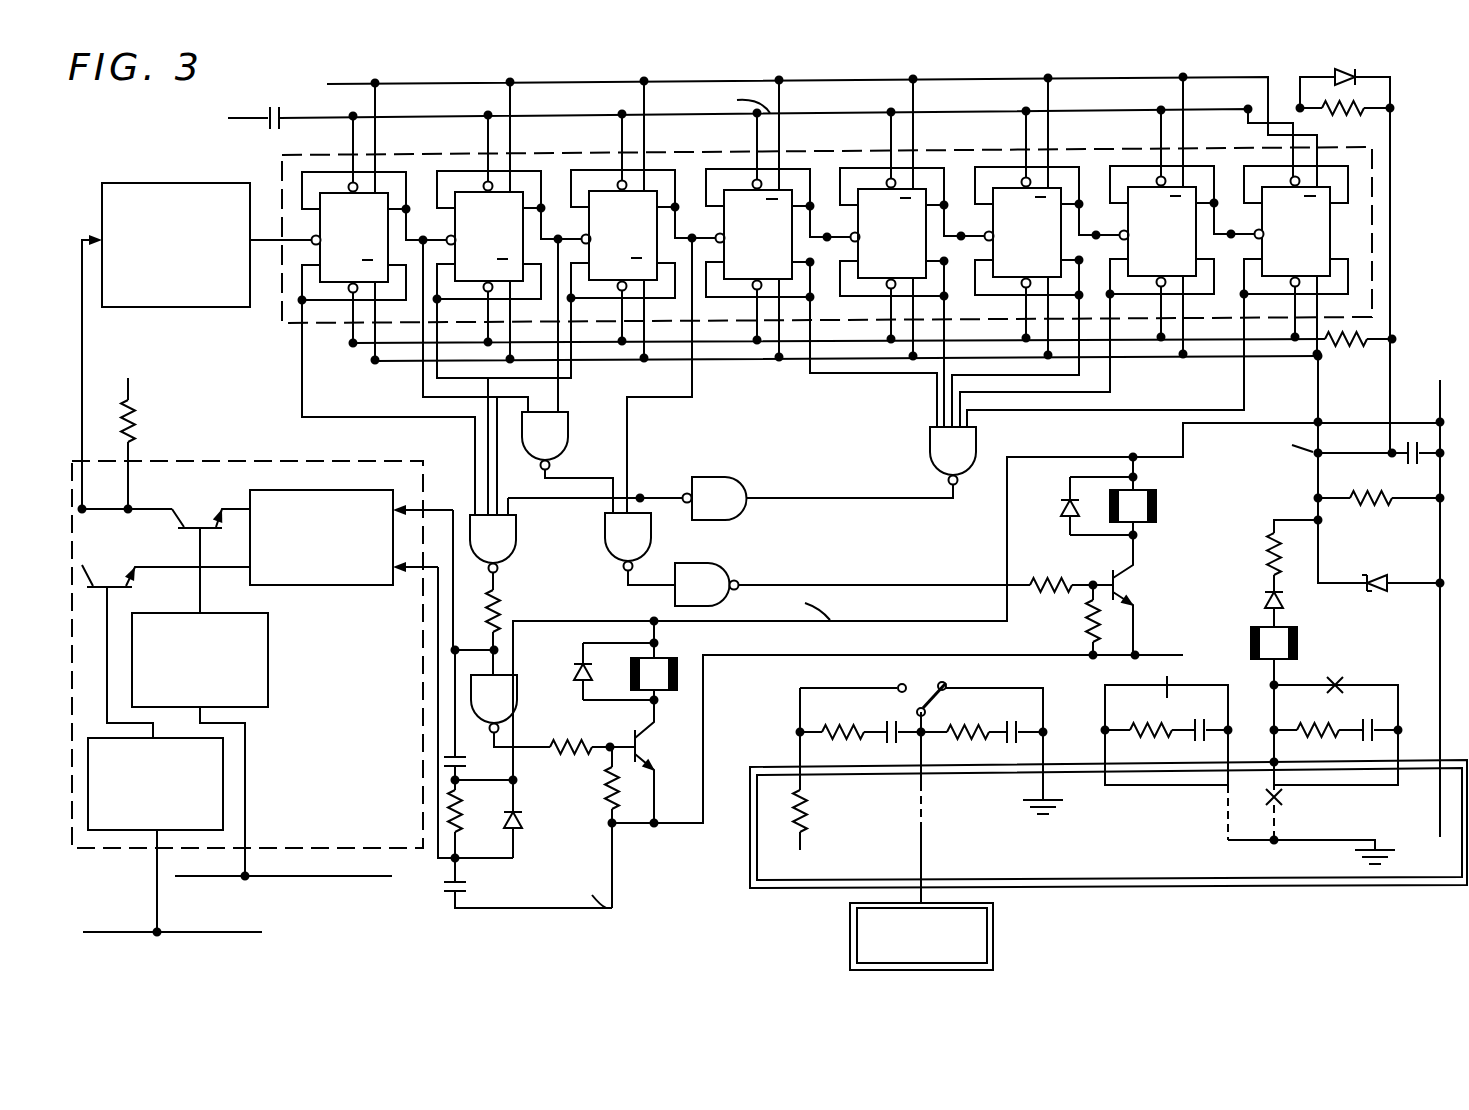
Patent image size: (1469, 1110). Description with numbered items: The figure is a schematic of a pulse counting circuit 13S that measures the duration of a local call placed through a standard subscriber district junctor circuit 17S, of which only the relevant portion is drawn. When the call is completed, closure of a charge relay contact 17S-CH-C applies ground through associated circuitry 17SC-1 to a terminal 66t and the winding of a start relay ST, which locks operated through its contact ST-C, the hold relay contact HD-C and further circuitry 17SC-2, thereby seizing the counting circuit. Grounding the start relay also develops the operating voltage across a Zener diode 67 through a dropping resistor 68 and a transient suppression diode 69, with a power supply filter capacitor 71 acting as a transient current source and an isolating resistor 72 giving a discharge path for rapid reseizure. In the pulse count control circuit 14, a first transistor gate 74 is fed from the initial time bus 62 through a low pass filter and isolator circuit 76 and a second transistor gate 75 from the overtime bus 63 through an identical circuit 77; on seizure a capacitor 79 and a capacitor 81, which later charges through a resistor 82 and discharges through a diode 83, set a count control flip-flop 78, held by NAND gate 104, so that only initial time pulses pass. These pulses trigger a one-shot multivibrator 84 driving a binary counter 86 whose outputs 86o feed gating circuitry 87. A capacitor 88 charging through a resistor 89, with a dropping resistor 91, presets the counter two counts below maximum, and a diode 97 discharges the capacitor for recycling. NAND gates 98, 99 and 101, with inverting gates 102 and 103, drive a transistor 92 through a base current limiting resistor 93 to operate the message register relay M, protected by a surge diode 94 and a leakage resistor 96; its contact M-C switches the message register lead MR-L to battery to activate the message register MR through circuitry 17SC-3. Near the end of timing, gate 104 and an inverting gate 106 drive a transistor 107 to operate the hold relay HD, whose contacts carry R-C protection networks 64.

The pulse counting circuit 13S is at (236, 151).
The capacitor 88 is at (270, 112).
The resistor 89 is at (1345, 120).
The diode 97 is at (1337, 73).
The binary counter 86 is at (1010, 148).
The counter outputs 86o is at (392, 205).
The dropping resistor 91 is at (1348, 347).
The one-shot multivibrator 84 is at (165, 308).
The gating circuitry 87 is at (714, 451).
The NAND gate 98 is at (568, 450).
The NAND gate 99 is at (651, 540).
The NAND gate 101 is at (931, 450).
The signal inverting gate 102 is at (748, 518).
The signal inverting gate 103 is at (728, 562).
The NAND gate 104 is at (517, 550).
The inverting gate 106 is at (517, 706).
The transistor 107 is at (652, 740).
The hold relay HD is at (657, 658).
The capacitor 79 is at (462, 760).
The capacitor 81 is at (465, 878).
The resistor 82 is at (473, 819).
The diode 83 is at (523, 822).
The message register relay M is at (1135, 488).
The diode 94 is at (1063, 510).
The base current limiting resistor 93 is at (1053, 577).
The transistor 92 is at (1125, 581).
The resistor 96 is at (1088, 630).
The power supply filter capacitor 71 is at (1402, 462).
The isolating resistor 72 is at (1372, 510).
The Zener diode 67 is at (1384, 598).
The dropping resistor 68 is at (1266, 548).
The transient suppression diode 69 is at (1263, 603).
The start relay ST is at (1297, 643).
The initial time-overtime pulse count control circuit 14 is at (236, 457).
The count control flip-flop 78 is at (320, 586).
The first transistor gate 74 is at (197, 525).
The second transistor gate 75 is at (104, 586).
The low pass R-C filter and isolator circuit 76 is at (268, 668).
The low pass R-C filter and isolator circuit 77 is at (118, 831).
The initial time bus 62 is at (317, 876).
The overtime bus 63 is at (195, 932).
The subscriber district junctor circuit 17S is at (777, 895).
The movable make-break contact M-C is at (927, 688).
The R-C protection networks 64 is at (885, 728).
The junctor circuitry 17SC-3 is at (921, 808).
The message register lead MR-L is at (921, 840).
The message register MR is at (993, 926).
The hold relay contact HD-C is at (1167, 684).
The junctor circuitry 17SC-2 is at (1226, 801).
The start relay contact ST-C is at (1341, 684).
The terminal 66t is at (1280, 762).
The charge relay contact 17S-CH-C is at (1284, 799).
The junctor circuitry 17SC-1 is at (1278, 826).